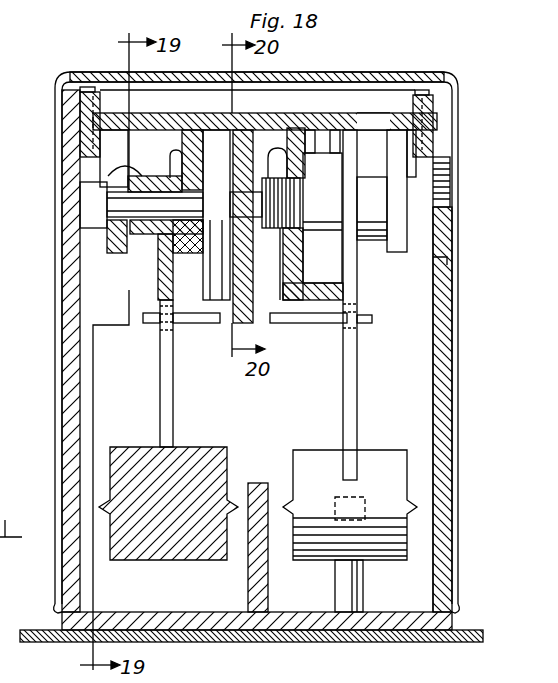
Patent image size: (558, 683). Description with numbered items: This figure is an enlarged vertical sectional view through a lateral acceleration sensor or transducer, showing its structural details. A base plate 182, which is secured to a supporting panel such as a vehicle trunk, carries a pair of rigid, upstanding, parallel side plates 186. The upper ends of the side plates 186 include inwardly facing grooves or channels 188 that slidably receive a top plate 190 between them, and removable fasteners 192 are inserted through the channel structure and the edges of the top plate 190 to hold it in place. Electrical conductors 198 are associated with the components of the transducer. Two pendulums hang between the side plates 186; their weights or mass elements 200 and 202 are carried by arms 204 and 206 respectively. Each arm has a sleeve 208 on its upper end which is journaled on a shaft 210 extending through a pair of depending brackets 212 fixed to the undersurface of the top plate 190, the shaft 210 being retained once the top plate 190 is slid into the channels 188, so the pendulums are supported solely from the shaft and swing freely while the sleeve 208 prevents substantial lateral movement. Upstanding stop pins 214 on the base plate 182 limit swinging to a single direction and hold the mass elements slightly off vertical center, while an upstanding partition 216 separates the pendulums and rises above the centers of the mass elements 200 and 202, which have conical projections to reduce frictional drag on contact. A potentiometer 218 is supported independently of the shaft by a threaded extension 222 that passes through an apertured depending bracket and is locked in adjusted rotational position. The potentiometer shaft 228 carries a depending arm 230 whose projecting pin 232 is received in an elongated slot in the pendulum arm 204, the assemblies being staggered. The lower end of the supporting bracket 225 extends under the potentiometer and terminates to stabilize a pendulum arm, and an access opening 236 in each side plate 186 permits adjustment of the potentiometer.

The base plate 182 is at (405, 618).
The side plates 186 is at (445, 383).
The channels 188 is at (80, 124).
The top plate 190 is at (233, 112).
The fasteners 192 is at (87, 87).
The electrical conductors 198 is at (19, 484).
The mass element 200 is at (207, 463).
The mass element 202 is at (308, 461).
The arm 204 is at (168, 382).
The arm 206 is at (348, 352).
The sleeve 208 is at (130, 168).
The shaft 210 is at (120, 203).
The brackets 212 is at (173, 233).
The stop pins 214 is at (345, 583).
The partition 216 is at (257, 567).
The potentiometer 218 is at (327, 178).
The threaded extension 222 is at (340, 112).
The supporting bracket 225 is at (298, 270).
The potentiometer shaft 228 is at (240, 205).
The depending arm 230 is at (232, 324).
The projecting pin 232 is at (146, 326).
The access opening 236 is at (445, 257).